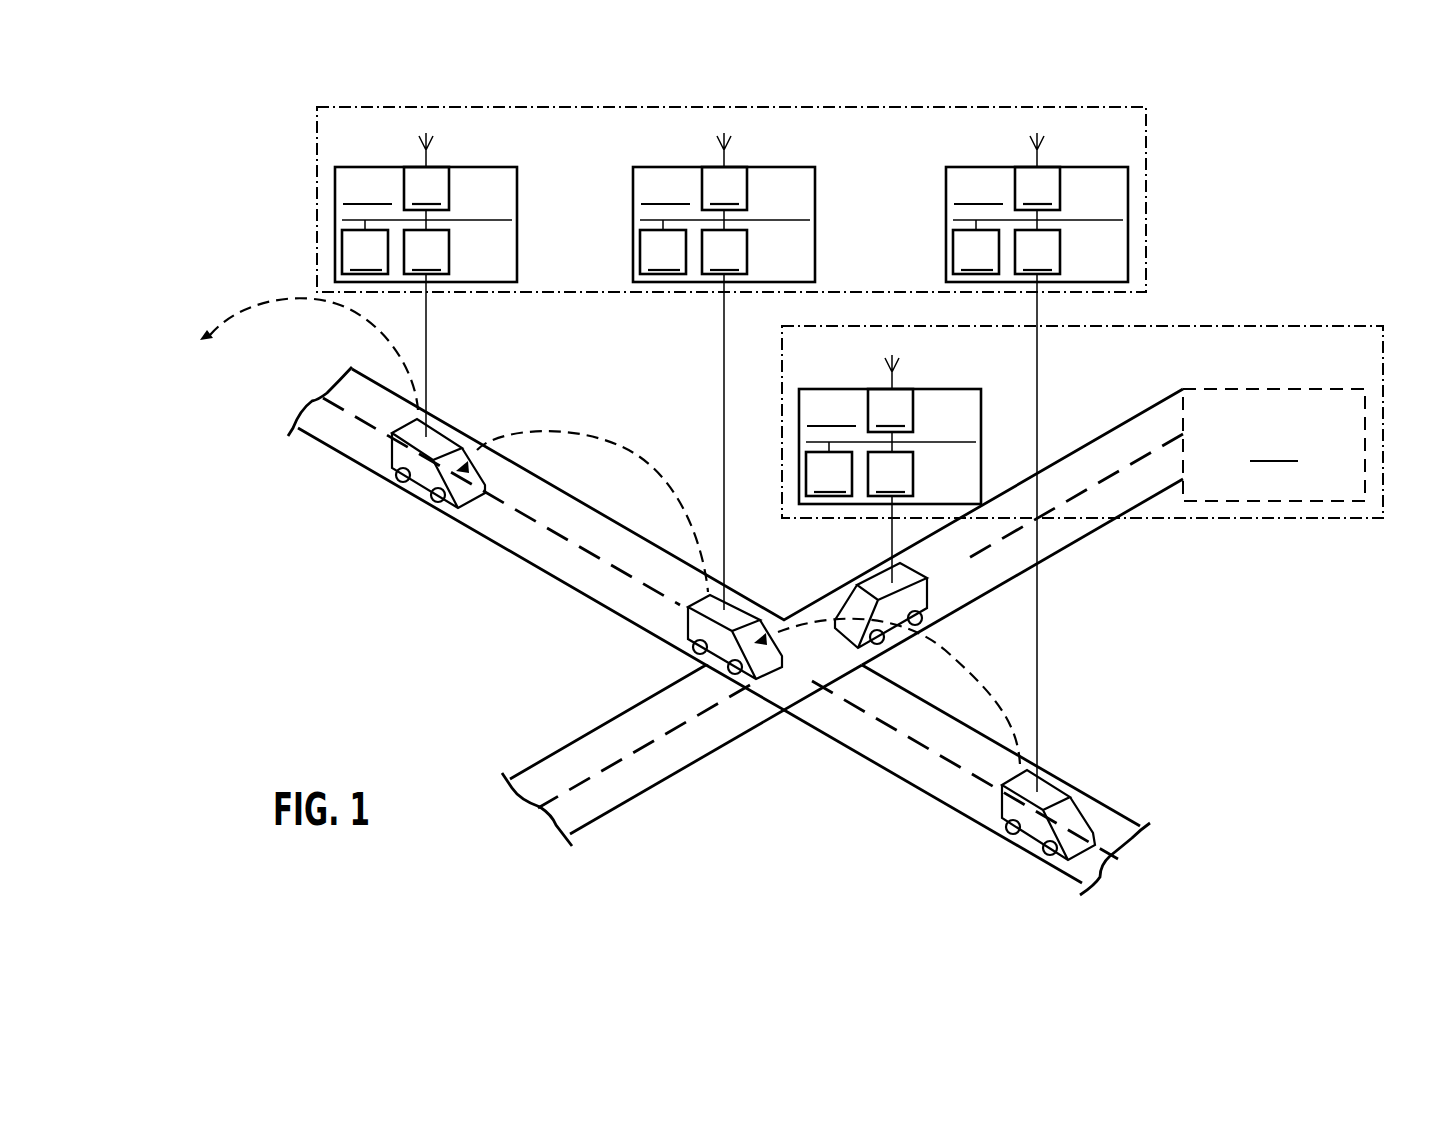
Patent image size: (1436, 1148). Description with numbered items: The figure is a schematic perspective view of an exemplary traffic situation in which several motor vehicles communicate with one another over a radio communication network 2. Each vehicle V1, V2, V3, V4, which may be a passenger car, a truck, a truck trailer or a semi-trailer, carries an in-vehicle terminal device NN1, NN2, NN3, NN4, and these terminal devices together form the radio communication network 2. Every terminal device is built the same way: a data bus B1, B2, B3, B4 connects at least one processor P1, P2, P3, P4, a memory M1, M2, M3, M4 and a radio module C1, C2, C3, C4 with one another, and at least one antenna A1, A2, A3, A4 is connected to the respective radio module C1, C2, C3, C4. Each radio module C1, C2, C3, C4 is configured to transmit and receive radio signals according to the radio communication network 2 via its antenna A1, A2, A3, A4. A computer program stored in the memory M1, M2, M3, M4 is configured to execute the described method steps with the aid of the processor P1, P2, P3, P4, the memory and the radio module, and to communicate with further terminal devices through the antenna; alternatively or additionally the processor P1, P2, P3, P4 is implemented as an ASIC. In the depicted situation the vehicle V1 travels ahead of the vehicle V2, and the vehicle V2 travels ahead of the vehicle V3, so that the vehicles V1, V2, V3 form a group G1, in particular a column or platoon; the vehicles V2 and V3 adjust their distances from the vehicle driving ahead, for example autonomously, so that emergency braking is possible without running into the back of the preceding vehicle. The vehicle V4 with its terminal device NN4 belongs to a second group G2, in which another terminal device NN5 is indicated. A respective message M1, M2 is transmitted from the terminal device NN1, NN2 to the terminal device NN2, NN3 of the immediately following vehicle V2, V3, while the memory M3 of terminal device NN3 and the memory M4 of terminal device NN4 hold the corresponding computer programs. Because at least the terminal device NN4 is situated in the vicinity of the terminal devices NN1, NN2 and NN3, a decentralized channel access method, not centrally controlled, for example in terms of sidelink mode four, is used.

The radio communication network 2 is at (253, 171).
The group G1 is at (1137, 150).
The group G2 is at (1340, 326).
The terminal device NN1 is at (1037, 458).
The terminal device NN2 is at (724, 367).
The terminal device NN3 is at (426, 281).
The terminal device NN4 is at (890, 459).
The terminal device NN5 is at (1274, 445).
The antenna A1 is at (1031, 158).
The antenna A2 is at (718, 158).
The antenna A3 is at (420, 158).
The antenna A4 is at (887, 381).
The data bus B1 is at (1093, 220).
The data bus B2 is at (780, 220).
The data bus B3 is at (482, 220).
The data bus B4 is at (943, 442).
The radio module C1 is at (1037, 188).
The radio module C2 is at (724, 188).
The radio module C3 is at (426, 188).
The radio module C4 is at (890, 410).
The processor P1 is at (1037, 252).
The processor P2 is at (724, 252).
The processor P3 is at (426, 252).
The processor P4 is at (890, 474).
The memory M4 is at (829, 474).
The message M1 is at (962, 665).
The message M2 is at (557, 432).
The memory M3 is at (289, 298).
The vehicle V1 is at (1052, 795).
The vehicle V2 is at (742, 612).
The vehicle V3 is at (413, 423).
The vehicle V4 is at (867, 587).